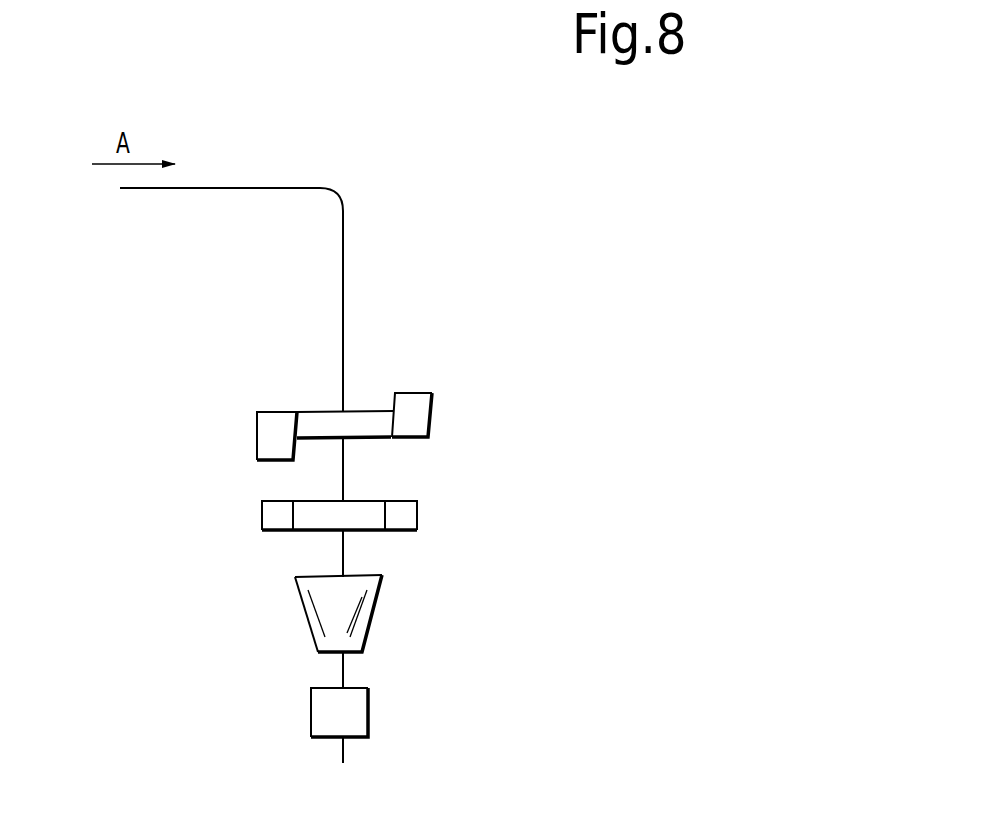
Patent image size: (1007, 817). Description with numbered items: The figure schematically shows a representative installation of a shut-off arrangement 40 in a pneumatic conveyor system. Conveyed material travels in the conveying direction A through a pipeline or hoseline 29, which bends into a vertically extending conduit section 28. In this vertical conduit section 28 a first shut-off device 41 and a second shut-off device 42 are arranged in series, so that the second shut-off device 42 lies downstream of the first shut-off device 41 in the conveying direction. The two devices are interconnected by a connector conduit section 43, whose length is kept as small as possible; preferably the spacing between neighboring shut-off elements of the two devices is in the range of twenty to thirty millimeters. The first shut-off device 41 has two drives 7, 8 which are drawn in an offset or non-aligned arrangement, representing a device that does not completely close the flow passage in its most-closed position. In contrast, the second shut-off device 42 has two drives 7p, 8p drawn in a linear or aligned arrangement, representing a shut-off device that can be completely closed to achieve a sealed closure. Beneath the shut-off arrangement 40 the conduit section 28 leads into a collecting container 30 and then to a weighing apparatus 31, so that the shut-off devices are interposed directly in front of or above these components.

The pipeline or hoseline 29 is at (240, 184).
The vertically extending conduit section 28 is at (343, 272).
The shut-off arrangement 40 is at (208, 463).
The first shut-off device 41 is at (323, 406).
The drive 7 is at (272, 432).
The drive 8 is at (415, 408).
The connector conduit section 43 is at (343, 471).
The second shut-off device 42 is at (297, 533).
The drive 7p is at (275, 515).
The drive 8p is at (402, 513).
The collecting container 30 is at (353, 598).
The weighing apparatus 31 is at (348, 708).